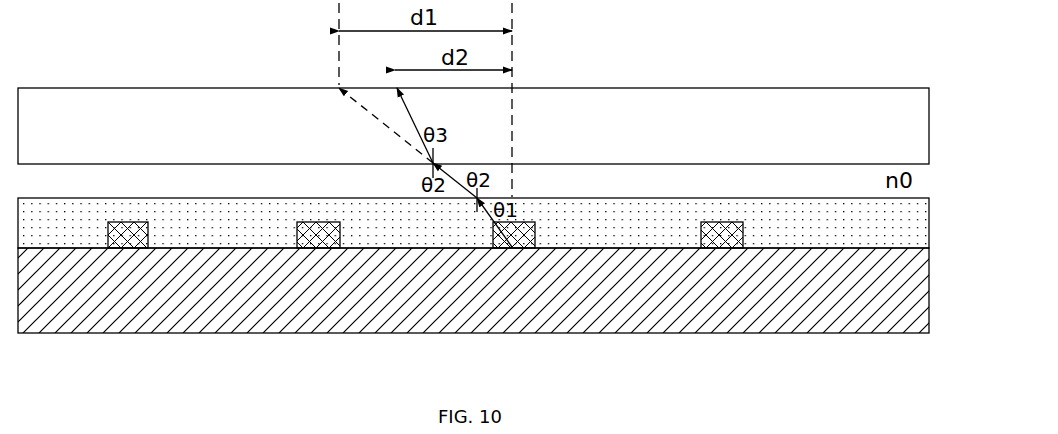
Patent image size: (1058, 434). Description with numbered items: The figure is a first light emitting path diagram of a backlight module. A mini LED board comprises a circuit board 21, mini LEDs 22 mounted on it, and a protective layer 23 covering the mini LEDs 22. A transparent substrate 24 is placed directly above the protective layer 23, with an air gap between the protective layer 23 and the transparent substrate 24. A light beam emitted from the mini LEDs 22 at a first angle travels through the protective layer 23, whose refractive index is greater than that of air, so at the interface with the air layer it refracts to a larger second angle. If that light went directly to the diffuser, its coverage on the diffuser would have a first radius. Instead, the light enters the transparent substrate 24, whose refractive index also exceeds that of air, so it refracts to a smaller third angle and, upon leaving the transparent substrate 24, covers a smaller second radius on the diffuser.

The circuit board 21 is at (370, 298).
The mini LEDs 22 is at (320, 225).
The protective layer 23 is at (602, 213).
The transparent substrate 24 is at (733, 128).